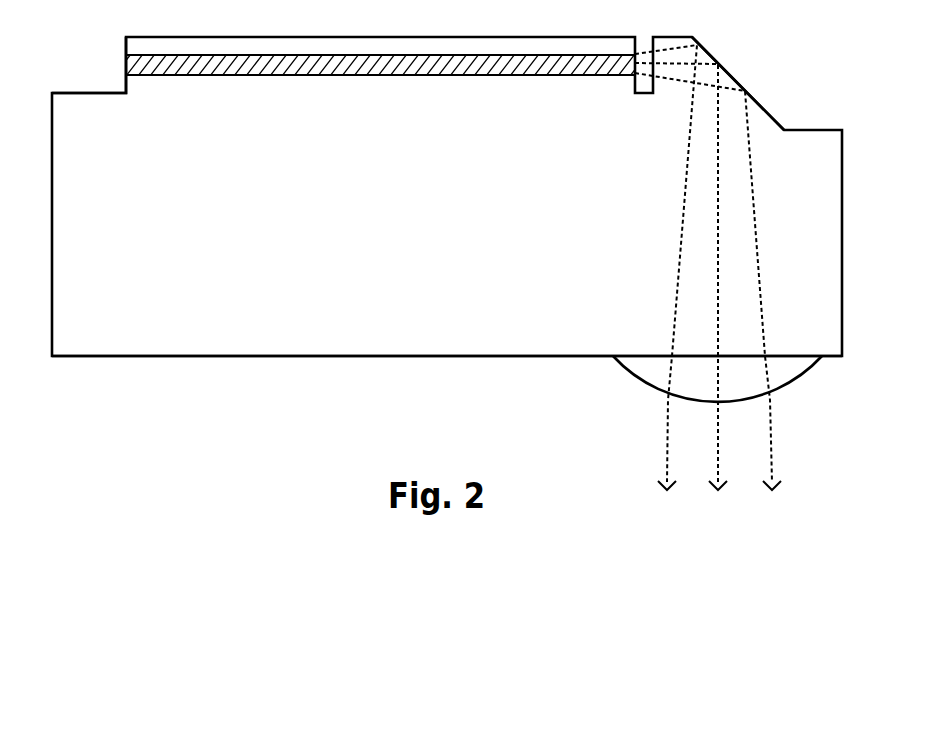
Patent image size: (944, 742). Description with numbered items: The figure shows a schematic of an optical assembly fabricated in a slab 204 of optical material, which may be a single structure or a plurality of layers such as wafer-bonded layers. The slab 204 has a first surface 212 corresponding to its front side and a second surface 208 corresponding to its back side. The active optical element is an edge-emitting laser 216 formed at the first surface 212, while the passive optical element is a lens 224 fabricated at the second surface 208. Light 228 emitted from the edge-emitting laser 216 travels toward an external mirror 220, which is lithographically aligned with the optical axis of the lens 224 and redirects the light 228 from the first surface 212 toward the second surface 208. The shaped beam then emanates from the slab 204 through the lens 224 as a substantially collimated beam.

The slab 204 is at (140, 314).
The second surface 208 is at (98, 92).
The first surface 212 is at (87, 357).
The edge-emitting laser 216 is at (345, 63).
The external mirror 220 is at (728, 73).
The lens 224 is at (817, 373).
The light 228 is at (643, 497).